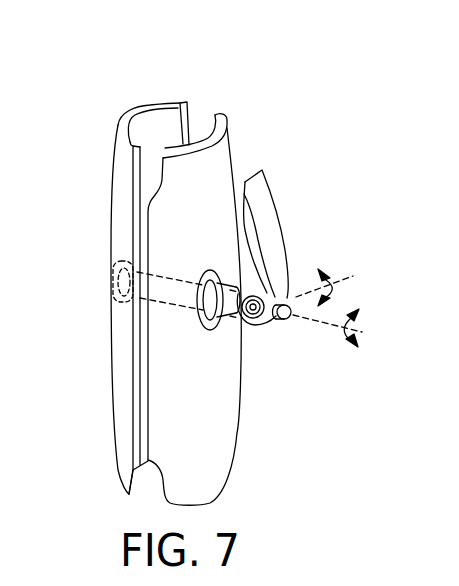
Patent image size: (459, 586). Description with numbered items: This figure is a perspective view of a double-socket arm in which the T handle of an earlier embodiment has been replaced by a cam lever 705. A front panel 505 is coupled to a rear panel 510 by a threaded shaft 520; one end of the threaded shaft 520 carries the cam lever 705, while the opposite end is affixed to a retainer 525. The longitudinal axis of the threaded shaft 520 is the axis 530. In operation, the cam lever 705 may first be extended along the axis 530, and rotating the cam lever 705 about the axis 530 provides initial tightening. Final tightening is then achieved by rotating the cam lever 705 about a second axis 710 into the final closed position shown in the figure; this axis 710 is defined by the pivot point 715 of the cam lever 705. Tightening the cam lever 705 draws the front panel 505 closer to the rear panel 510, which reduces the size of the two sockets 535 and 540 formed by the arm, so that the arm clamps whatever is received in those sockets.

The front panel 505 is at (193, 447).
The rear panel 510 is at (112, 352).
The threaded shaft 520 is at (170, 287).
The retainer 525 is at (112, 270).
The axis 530 is at (346, 328).
The socket 535 is at (199, 102).
The socket 540 is at (142, 496).
The cam lever 705 is at (262, 192).
The axis 710 is at (346, 284).
The pivot point 715 is at (268, 326).